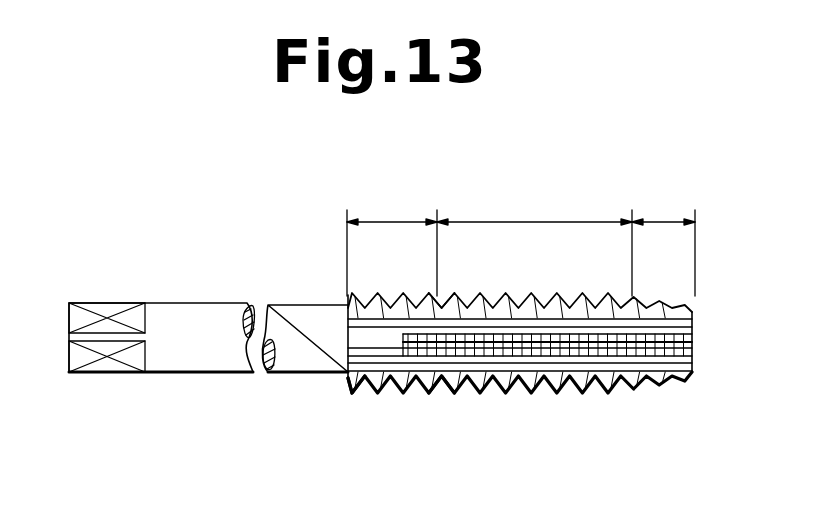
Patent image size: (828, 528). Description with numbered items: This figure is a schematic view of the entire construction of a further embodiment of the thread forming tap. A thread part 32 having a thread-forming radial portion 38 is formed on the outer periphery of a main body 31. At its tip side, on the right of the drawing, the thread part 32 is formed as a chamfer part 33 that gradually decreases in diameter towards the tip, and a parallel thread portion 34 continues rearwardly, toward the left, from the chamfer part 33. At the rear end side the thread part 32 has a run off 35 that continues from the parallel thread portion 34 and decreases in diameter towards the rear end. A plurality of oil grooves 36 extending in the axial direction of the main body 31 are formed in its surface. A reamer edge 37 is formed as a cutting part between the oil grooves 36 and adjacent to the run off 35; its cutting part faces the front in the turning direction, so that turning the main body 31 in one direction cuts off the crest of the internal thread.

The main body 31 is at (300, 318).
The thread part 32 is at (490, 397).
The chamfer part 33 is at (663, 249).
The parallel thread portion 34 is at (534, 245).
The run off 35 is at (392, 244).
The oil grooves 36 is at (577, 333).
The reamer edge 37 is at (353, 378).
The thread-forming radial portion 38 is at (443, 296).